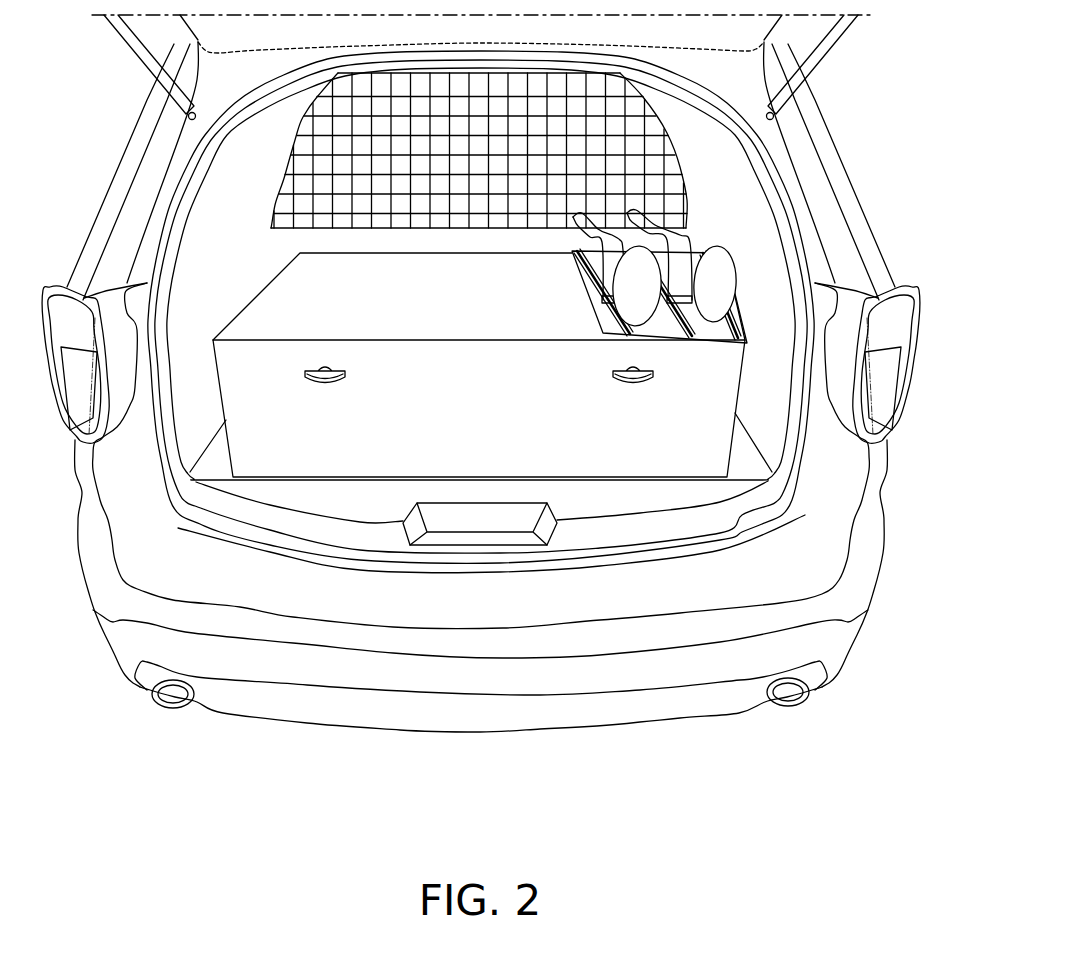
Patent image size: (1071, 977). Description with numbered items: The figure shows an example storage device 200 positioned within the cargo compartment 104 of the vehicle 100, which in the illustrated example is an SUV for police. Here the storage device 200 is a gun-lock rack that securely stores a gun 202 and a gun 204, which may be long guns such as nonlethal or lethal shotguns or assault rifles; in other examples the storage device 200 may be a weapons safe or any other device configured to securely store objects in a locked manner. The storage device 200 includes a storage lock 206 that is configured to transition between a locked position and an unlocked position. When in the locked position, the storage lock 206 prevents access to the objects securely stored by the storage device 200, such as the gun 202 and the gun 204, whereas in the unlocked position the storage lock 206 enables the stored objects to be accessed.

The vehicle 100 is at (700, 700).
The cargo compartment 104 is at (419, 292).
The storage device 200 is at (683, 323).
The gun 202 is at (717, 263).
The gun 204 is at (603, 327).
The storage lock 206 is at (643, 302).